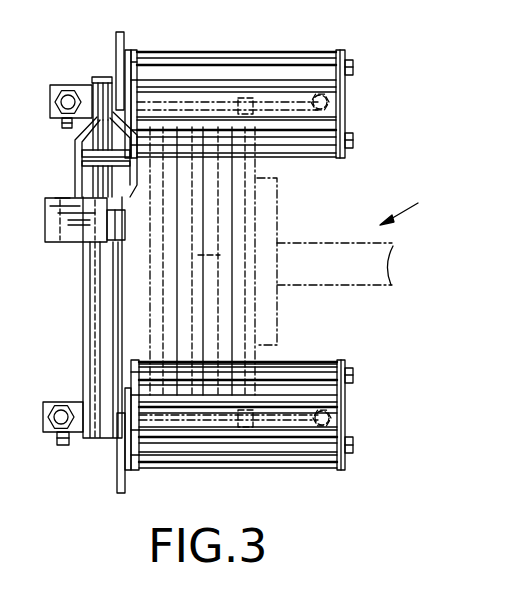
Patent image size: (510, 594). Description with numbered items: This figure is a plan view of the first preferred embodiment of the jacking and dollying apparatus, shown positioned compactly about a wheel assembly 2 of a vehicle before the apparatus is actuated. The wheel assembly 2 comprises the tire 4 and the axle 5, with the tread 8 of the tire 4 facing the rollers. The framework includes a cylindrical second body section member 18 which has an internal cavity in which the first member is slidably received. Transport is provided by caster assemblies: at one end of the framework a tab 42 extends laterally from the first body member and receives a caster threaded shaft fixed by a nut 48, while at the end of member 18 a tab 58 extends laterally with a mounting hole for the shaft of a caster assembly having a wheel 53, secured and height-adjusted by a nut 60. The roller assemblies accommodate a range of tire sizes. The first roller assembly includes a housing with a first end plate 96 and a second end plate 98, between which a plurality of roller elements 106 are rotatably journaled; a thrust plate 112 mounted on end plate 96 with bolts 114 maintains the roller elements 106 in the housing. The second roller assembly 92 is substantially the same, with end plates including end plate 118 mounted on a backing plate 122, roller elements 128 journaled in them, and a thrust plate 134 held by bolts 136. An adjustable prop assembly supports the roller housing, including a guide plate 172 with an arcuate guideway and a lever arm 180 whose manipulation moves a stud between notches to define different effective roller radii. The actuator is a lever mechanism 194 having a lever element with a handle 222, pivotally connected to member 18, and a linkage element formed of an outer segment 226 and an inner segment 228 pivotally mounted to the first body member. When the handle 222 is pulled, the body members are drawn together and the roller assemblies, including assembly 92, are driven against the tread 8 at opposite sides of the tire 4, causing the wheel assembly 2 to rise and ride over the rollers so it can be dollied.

The wheel assembly 2 is at (406, 206).
The tire 4 is at (265, 358).
The axle 5 is at (357, 225).
The tread 8 is at (209, 243).
The second body section member 18 is at (92, 296).
The tab 42 is at (58, 85).
The nut 48 is at (78, 85).
The wheel 53 is at (62, 446).
The tab 58 is at (44, 433).
The nut 60 is at (64, 402).
The second roller assembly 92 is at (133, 465).
The first end plate 96 is at (341, 52).
The second end plate 98 is at (132, 50).
The roller elements 106 is at (258, 80).
The thrust plate 112 is at (345, 103).
The bolts 114 is at (353, 68).
The end plate 118 is at (339, 470).
The backing plate 122 is at (198, 466).
The roller elements 128 is at (316, 363).
The thrust plate 134 is at (345, 418).
The bolts 136 is at (353, 375).
The guide plate 172 is at (132, 62).
The lever arm 180 is at (119, 32).
The lever mechanism 194 is at (62, 198).
The handle 222 is at (47, 240).
The outer segment 226 is at (75, 147).
The inner segment 228 is at (133, 185).